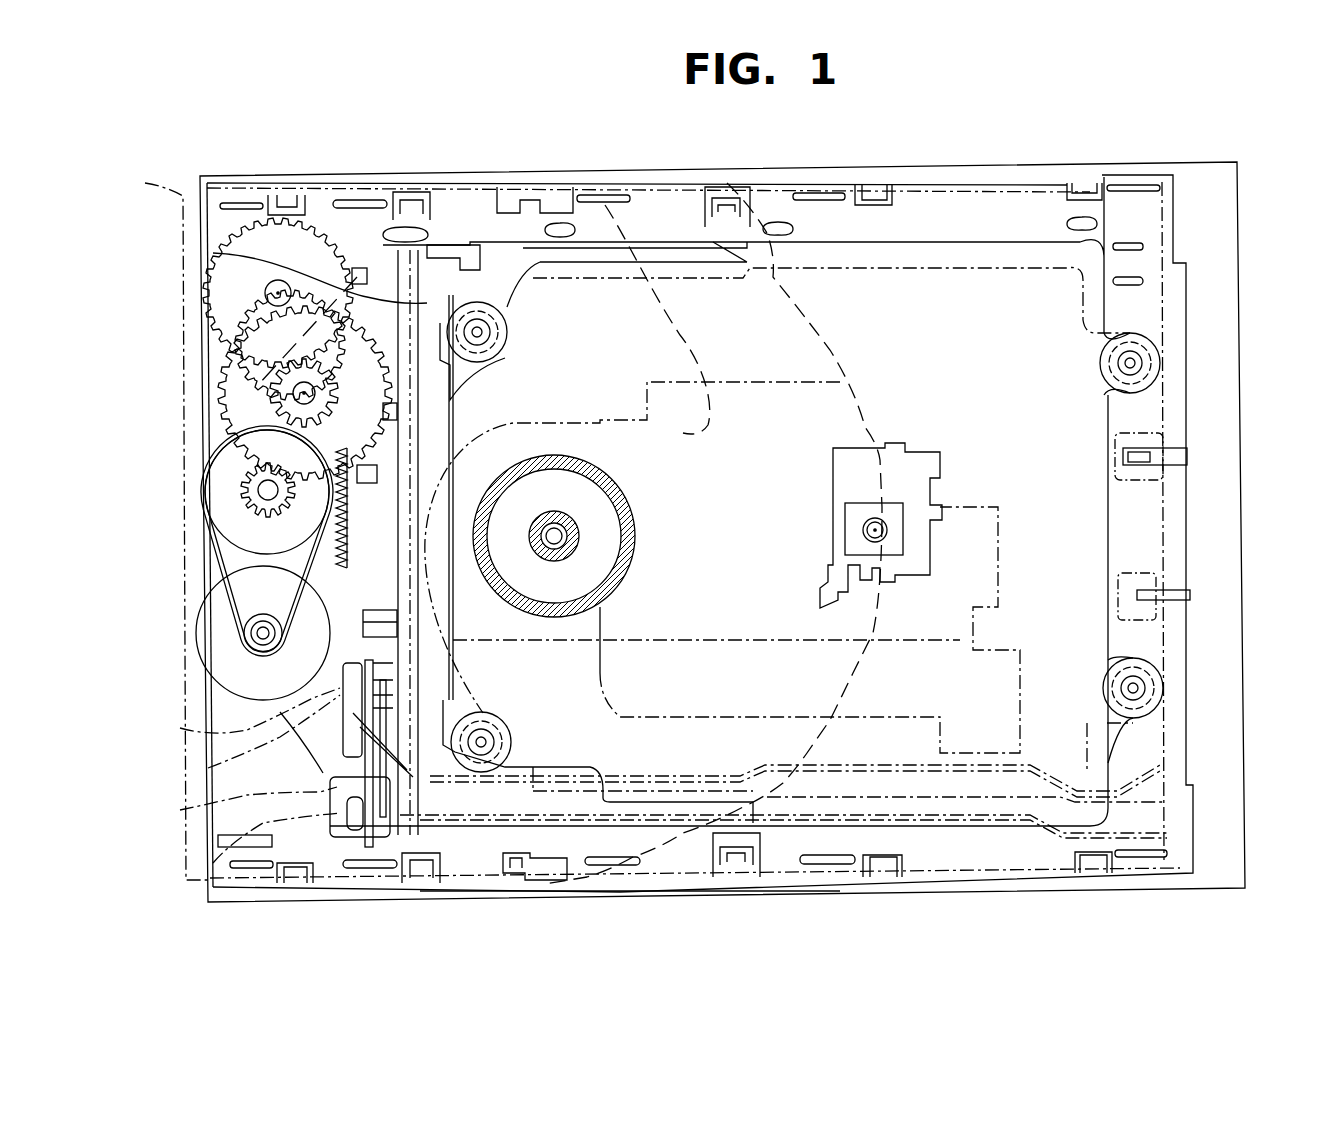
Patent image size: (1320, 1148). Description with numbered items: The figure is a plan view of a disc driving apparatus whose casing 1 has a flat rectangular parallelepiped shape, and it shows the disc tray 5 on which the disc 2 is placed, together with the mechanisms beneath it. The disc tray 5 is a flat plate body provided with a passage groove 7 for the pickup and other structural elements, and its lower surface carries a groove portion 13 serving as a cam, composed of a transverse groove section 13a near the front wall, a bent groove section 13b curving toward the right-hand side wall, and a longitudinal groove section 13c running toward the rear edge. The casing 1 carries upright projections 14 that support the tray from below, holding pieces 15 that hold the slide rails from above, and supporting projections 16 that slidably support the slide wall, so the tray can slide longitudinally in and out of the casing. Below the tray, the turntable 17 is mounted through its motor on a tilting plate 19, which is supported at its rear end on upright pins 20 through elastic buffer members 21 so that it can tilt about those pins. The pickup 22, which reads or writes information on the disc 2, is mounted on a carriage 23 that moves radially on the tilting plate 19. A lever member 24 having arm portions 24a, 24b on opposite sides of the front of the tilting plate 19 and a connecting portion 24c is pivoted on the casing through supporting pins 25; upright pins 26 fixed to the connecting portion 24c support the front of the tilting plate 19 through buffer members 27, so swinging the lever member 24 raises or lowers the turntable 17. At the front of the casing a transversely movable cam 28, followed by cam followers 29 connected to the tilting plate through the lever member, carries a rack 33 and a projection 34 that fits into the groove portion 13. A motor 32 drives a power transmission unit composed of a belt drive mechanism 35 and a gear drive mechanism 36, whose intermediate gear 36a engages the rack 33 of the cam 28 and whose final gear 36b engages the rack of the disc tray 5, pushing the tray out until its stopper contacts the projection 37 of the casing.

The casing 1 is at (1187, 172).
The disc 2 is at (930, 290).
The disc tray 5 is at (165, 520).
The passage groove 7 is at (617, 203).
The groove portion 13 is at (985, 805).
The transverse groove section 13a is at (208, 770).
The bent groove section 13b is at (210, 816).
The longitudinal groove section 13c is at (593, 803).
The upright projections 14 is at (242, 203).
The holding pieces 15 is at (290, 205).
The supporting projections 16 is at (560, 222).
The turntable 17 is at (612, 482).
The tilting plate 19 is at (1002, 235).
The upright pins 20 is at (1135, 363).
The buffer members 21 is at (1142, 345).
The pickup 22 is at (830, 505).
The carriage 23 is at (830, 565).
The lever member 24 is at (493, 307).
The arm portion 24a is at (668, 262).
The arm portion 24b is at (685, 805).
The connecting portion 24c is at (213, 253).
The supporting pins 25 is at (722, 200).
The upright pins 26 is at (476, 330).
The buffer members 27 is at (497, 307).
The cam 28 is at (387, 247).
The cam followers 29 is at (335, 450).
The motor 32 is at (197, 632).
The rack 33 is at (205, 482).
The projection 34 is at (180, 728).
The belt drive mechanism 35 is at (210, 545).
The gear drive mechanism 36 is at (228, 358).
The intermediate gear 36a is at (270, 372).
The final gear 36b is at (205, 293).
The projection 37 is at (400, 215).